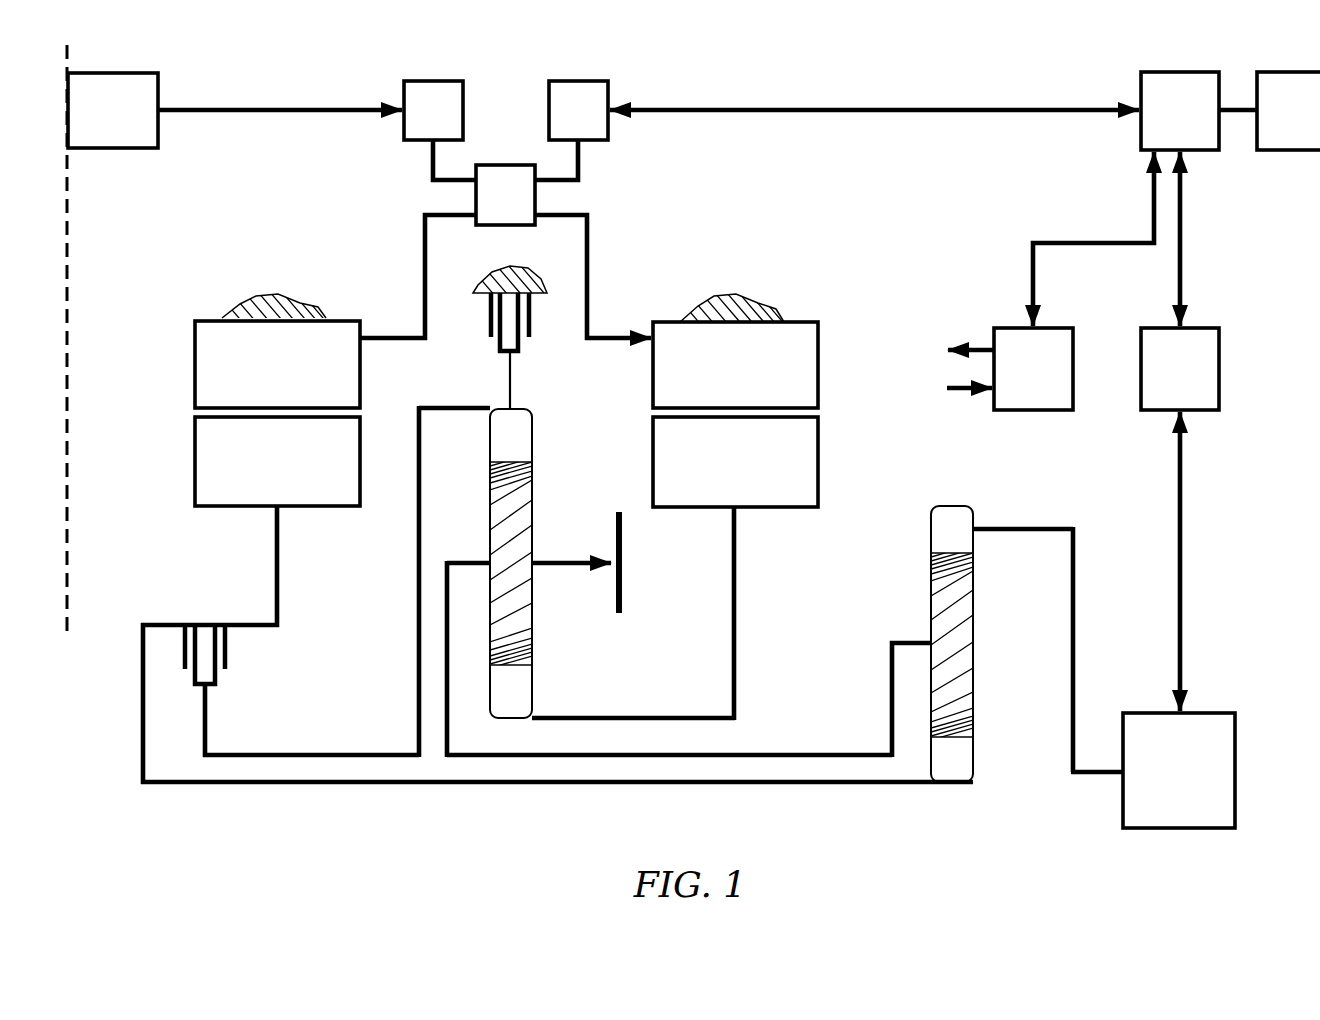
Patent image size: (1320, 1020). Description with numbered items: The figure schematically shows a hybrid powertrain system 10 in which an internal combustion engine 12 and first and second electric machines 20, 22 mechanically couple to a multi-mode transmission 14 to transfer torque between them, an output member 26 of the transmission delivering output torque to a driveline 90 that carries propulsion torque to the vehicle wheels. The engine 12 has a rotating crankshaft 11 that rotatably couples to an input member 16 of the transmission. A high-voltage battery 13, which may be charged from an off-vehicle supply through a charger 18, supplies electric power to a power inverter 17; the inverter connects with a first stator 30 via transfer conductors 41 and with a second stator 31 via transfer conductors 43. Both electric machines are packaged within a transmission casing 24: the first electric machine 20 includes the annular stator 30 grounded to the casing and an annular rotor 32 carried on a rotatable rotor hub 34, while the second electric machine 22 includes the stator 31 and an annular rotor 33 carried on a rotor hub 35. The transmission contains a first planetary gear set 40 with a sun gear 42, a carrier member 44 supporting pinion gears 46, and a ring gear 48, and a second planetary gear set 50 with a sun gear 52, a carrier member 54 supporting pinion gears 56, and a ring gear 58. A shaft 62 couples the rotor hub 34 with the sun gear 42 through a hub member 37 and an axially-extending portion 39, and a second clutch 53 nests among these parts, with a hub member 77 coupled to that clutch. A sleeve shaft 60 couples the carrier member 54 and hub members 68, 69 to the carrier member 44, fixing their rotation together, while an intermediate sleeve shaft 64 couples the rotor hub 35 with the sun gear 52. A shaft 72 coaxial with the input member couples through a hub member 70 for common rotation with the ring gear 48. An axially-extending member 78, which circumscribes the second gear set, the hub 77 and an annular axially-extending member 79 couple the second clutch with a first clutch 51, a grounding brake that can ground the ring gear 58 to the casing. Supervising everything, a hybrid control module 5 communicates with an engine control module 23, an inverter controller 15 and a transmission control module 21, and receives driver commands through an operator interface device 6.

The hybrid control module (HCP) 5 is at (1172, 123).
The operator interface device 6 is at (1288, 123).
The hybrid powertrain system 10 is at (864, 303).
The crankshaft 11 is at (1103, 785).
The internal combustion engine 12 is at (1166, 788).
The high-voltage energy storage device (battery) 13 is at (447, 123).
The multi-mode transmission 14 is at (172, 302).
The inverter controller 15 is at (592, 123).
The input member 16 is at (1077, 780).
The power inverter 17 is at (519, 208).
The charger 18 is at (98, 123).
The first electric machine 20 is at (170, 424).
The transmission control module (TCM) 21 is at (1019, 383).
The second electric machine 22 is at (830, 410).
The engine control module (ECM) 23 is at (1166, 383).
The transmission casing 24 is at (262, 293).
The output member 26 is at (577, 568).
The first stator 30 is at (263, 378).
The second stator 31 is at (721, 378).
The first rotor 32 is at (263, 475).
The second rotor 33 is at (721, 475).
The first rotor hub 34 is at (275, 586).
The second rotor hub 35 is at (737, 573).
The hub member 37 is at (142, 702).
The axially-extending portion 39 is at (158, 624).
The first planetary gear set 40 is at (991, 615).
The transfer conductors 41 is at (397, 338).
The first sun gear 42 is at (975, 760).
The transfer conductors 43 is at (590, 290).
The first carrier member 44 is at (908, 642).
The pinion gears 46 is at (975, 600).
The first ring gear 48 is at (950, 505).
The second planetary gear set 50 is at (561, 563).
The first clutch 51 is at (585, 378).
The second sun gear 52 is at (533, 692).
The second clutch 53 is at (270, 725).
The second carrier member 54 is at (470, 562).
The pinion gears 56 is at (533, 500).
The second ring gear 58 is at (533, 438).
The sleeve shaft 60 is at (800, 754).
The shaft 62 is at (545, 785).
The intermediate sleeve shaft 64 is at (708, 717).
The hub member 68 is at (446, 612).
The hub member 69 is at (890, 677).
The hub member 70 is at (1076, 622).
The shaft 72 is at (1000, 527).
The hub member 77 is at (417, 578).
The axially-extending member 78 is at (465, 406).
The axially-extending member 79 is at (345, 754).
The driveline 90 is at (622, 556).